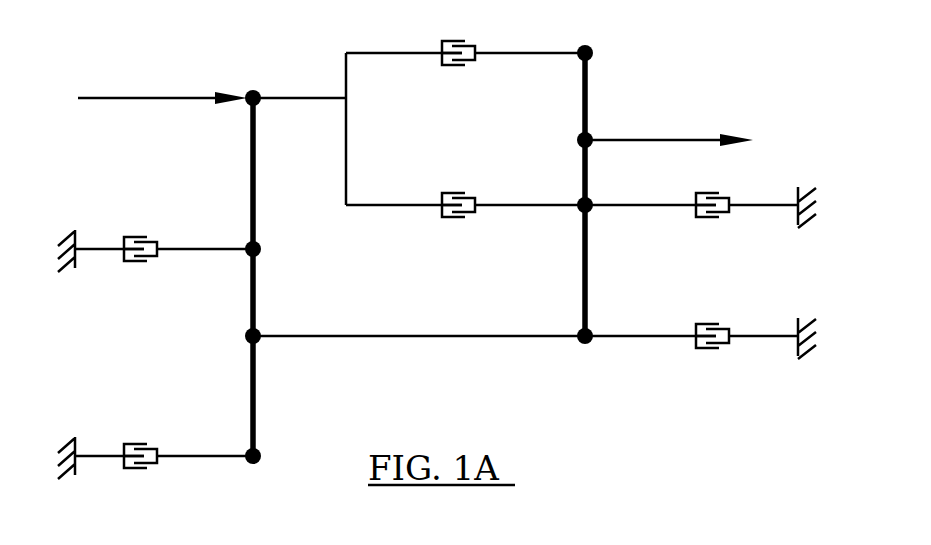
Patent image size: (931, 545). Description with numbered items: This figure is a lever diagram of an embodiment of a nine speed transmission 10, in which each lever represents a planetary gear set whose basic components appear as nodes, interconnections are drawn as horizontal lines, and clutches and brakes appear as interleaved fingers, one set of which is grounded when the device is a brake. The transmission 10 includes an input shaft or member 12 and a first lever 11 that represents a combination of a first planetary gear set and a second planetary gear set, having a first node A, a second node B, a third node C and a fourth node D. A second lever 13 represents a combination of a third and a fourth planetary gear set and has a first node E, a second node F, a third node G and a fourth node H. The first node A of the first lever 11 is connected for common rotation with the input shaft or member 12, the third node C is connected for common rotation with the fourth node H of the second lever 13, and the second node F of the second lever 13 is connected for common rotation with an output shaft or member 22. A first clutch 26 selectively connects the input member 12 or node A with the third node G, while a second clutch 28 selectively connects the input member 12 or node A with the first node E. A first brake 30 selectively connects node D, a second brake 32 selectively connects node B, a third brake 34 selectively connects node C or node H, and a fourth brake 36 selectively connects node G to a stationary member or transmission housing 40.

The nine speed transmission 10 is at (93, 54).
The first lever 11 is at (242, 486).
The input shaft or member 12 is at (136, 96).
The second lever 13 is at (573, 384).
The output shaft or member 22 is at (681, 138).
The first clutch 26 is at (458, 191).
The second clutch 28 is at (455, 67).
The first brake 30 is at (147, 442).
The second brake 32 is at (147, 235).
The third brake 34 is at (708, 322).
The fourth brake 36 is at (707, 220).
The stationary member or transmission housing 40 is at (59, 228).